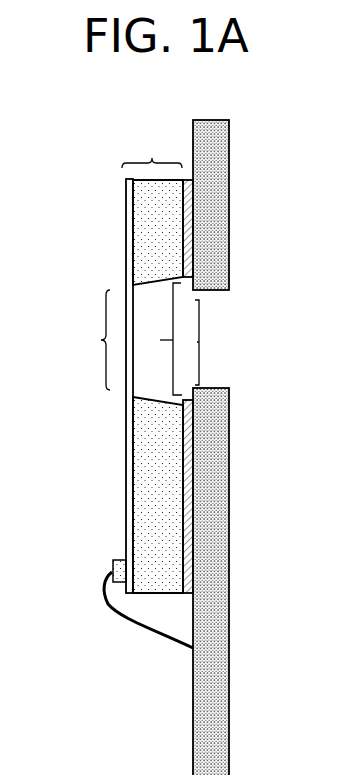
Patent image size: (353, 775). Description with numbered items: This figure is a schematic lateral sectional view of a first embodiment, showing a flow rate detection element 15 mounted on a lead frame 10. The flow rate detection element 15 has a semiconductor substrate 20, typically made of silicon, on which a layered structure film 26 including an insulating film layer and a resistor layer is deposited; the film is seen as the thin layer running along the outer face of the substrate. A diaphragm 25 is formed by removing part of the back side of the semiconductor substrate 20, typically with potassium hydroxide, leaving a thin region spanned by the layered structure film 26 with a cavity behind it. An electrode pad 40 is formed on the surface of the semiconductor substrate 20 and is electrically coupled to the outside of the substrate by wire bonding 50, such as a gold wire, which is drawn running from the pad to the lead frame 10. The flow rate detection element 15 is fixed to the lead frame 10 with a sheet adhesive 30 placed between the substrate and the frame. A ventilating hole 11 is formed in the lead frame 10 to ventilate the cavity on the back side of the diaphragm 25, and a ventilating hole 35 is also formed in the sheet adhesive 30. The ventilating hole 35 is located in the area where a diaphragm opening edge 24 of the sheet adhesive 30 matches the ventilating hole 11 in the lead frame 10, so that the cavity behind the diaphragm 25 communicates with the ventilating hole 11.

The lead frame 10 is at (212, 135).
The ventilating hole 11 is at (208, 346).
The flow rate detection element 15 is at (153, 143).
The semiconductor substrate 20 is at (151, 491).
The diaphragm opening edge 24 is at (182, 270).
The diaphragm 25 is at (97, 333).
The layered structure film 26 is at (128, 201).
The sheet adhesive 30 is at (183, 240).
The ventilating hole 35 is at (160, 340).
The electrode pad 40 is at (113, 566).
The wire bonding 50 is at (100, 596).